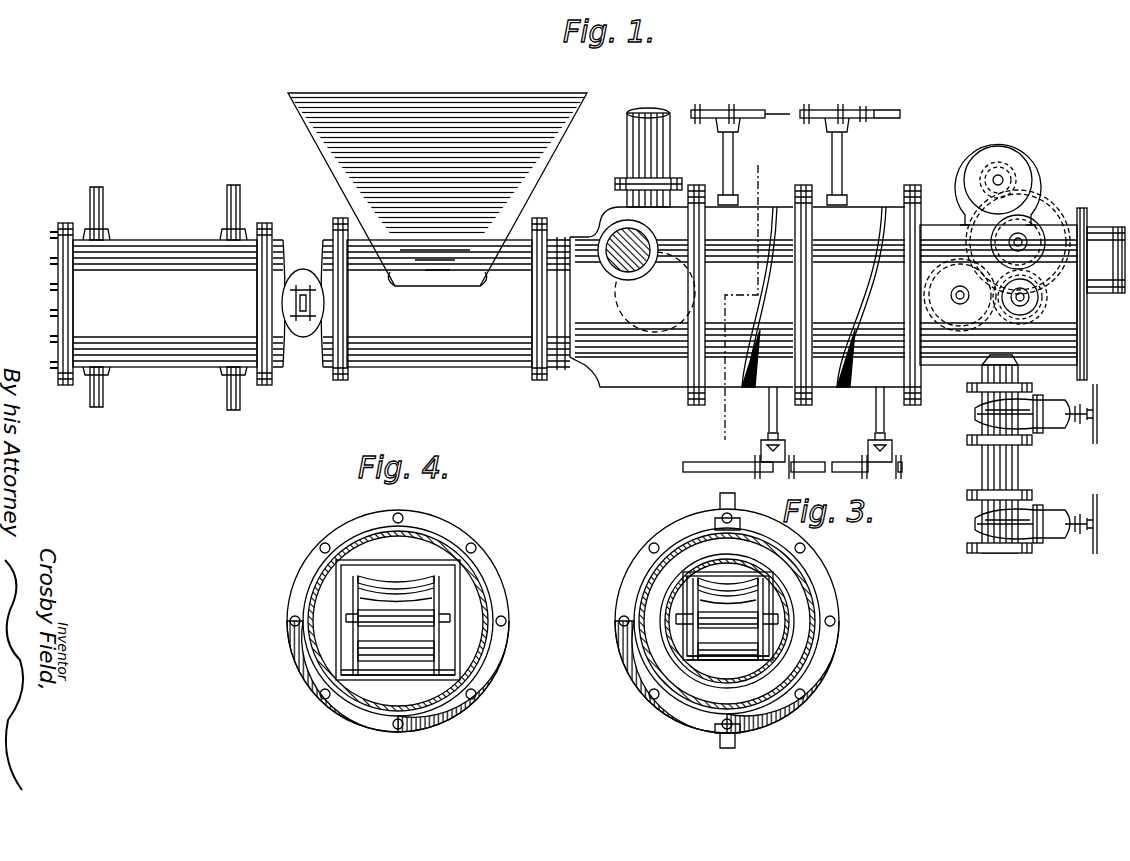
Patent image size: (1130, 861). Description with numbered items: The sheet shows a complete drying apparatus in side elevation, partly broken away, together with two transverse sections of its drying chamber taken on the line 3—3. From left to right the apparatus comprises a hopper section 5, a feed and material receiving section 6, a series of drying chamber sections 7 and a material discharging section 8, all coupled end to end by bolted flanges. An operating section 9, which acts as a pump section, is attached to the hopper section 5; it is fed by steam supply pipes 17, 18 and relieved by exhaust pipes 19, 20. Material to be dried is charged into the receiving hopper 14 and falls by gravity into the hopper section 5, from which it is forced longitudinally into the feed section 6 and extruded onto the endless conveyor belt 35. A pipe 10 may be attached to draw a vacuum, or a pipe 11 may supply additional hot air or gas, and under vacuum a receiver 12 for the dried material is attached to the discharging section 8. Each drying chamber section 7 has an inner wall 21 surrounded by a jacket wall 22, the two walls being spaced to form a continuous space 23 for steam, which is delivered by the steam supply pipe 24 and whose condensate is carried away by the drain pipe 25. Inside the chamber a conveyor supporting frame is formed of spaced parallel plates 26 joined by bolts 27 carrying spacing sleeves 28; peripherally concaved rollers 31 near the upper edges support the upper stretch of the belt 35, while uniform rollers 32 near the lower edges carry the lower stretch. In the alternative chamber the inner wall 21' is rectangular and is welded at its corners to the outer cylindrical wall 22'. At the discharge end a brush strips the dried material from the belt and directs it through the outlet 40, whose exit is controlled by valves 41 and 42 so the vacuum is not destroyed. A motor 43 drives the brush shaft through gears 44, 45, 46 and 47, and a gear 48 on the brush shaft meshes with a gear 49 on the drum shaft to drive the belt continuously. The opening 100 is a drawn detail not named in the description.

In FIG. 1, the section line 3 is at (743, 292).
In FIG. 1, the hopper section 5 is at (458, 303).
In FIG. 1, the feed and material receiving section 6 is at (737, 297).
In FIG. 1, the drying chamber sections 7 is at (812, 297).
In FIG. 1, the material discharging section 8 is at (940, 225).
In FIG. 1, the operating section 9 is at (165, 303).
In FIG. 1, the pipe 10 is at (626, 150).
In FIG. 1, the pipe 11 is at (1106, 260).
In FIG. 1, the receiver 12 is at (1022, 468).
In FIG. 1, the receiving hopper 14 is at (538, 180).
In FIG. 1, the steam supply pipe 17 is at (103, 203).
In FIG. 1, the steam supply pipe 18 is at (240, 196).
In FIG. 1, the exhaust pipe 19 is at (103, 394).
In FIG. 1, the exhaust pipe 20 is at (226, 398).
In FIG. 3, the inner wall 21 is at (755, 621).
In FIG. 4, the inner wall 21' is at (422, 621).
In FIG. 3, the jacket wall 22 is at (741, 620).
In FIG. 4, the outer cylindrical wall 22' is at (405, 621).
In FIG. 3, the continuous space 23 is at (803, 648).
In FIG. 1, the steam supply pipe 24 is at (762, 107).
In FIG. 1, the drain pipe 25 is at (690, 462).
In FIG. 4, the frame plates 26 is at (443, 638).
In FIG. 3, the frame plates 26 is at (688, 592).
In FIG. 4, the bolts 27 is at (385, 659).
In FIG. 3, the bolts 27 is at (750, 642).
In FIG. 4, the spacing sleeves 28 is at (369, 621).
In FIG. 3, the spacing sleeves 28 is at (705, 626).
In FIG. 4, the peripherally concaved rollers 31 is at (428, 578).
In FIG. 3, the peripherally concaved rollers 31 is at (697, 578).
In FIG. 4, the rollers 32 is at (425, 660).
In FIG. 3, the rollers 32 is at (731, 668).
In FIG. 4, the endless conveyor belt 35 is at (367, 578).
In FIG. 3, the endless conveyor belt 35 is at (712, 578).
In FIG. 1, the outlet 40 is at (976, 368).
In FIG. 1, the valve 41 is at (1030, 412).
In FIG. 1, the valve 42 is at (1037, 522).
In FIG. 1, the motor 43 is at (1006, 160).
In FIG. 1, the gear 44 is at (1012, 172).
In FIG. 1, the gear 45 is at (1048, 202).
In FIG. 1, the gear 46 is at (1033, 223).
In FIG. 1, the gear 47 is at (1044, 297).
In FIG. 1, the gear 48 is at (1040, 310).
In FIG. 1, the gear 49 is at (926, 272).
In FIG. 1, the opening 100 is at (622, 270).